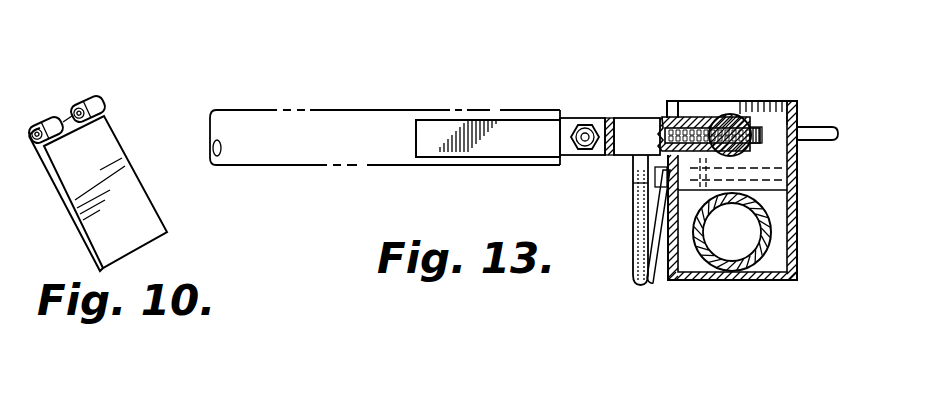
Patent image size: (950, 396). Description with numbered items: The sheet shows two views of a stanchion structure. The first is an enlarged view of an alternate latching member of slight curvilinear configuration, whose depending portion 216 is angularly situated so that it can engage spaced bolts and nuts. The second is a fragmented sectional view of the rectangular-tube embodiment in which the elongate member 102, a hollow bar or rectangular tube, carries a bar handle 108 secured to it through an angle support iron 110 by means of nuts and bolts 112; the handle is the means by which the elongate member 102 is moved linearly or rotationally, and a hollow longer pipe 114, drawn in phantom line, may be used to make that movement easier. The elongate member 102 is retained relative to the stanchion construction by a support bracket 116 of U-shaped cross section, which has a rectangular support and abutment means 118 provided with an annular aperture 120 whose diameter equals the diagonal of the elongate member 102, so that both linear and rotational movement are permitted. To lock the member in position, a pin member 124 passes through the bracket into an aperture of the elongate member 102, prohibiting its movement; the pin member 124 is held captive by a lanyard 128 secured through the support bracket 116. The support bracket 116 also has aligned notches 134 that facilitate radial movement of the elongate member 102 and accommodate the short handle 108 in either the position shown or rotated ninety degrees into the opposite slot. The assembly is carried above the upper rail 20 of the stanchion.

In FIG. 10, the depending portion 216 is at (150, 222).
In FIG. 13, the hollow longer pipe 114 is at (338, 126).
In FIG. 13, the bar handle 108 is at (492, 120).
In FIG. 13, the angle support iron 110 is at (632, 142).
In FIG. 13, the nuts and bolts 112 is at (585, 122).
In FIG. 13, the aligned notches 134 is at (665, 118).
In FIG. 13, the annular aperture 120 is at (727, 110).
In FIG. 13, the elongate member 102 is at (733, 102).
In FIG. 13, the rectangular support and abutment means 118 is at (765, 100).
In FIG. 13, the pin member 124 is at (808, 133).
In FIG. 13, the support bracket 116 is at (637, 250).
In FIG. 13, the lanyard 128 is at (635, 208).
In FIG. 13, the upper rail 20 is at (737, 280).